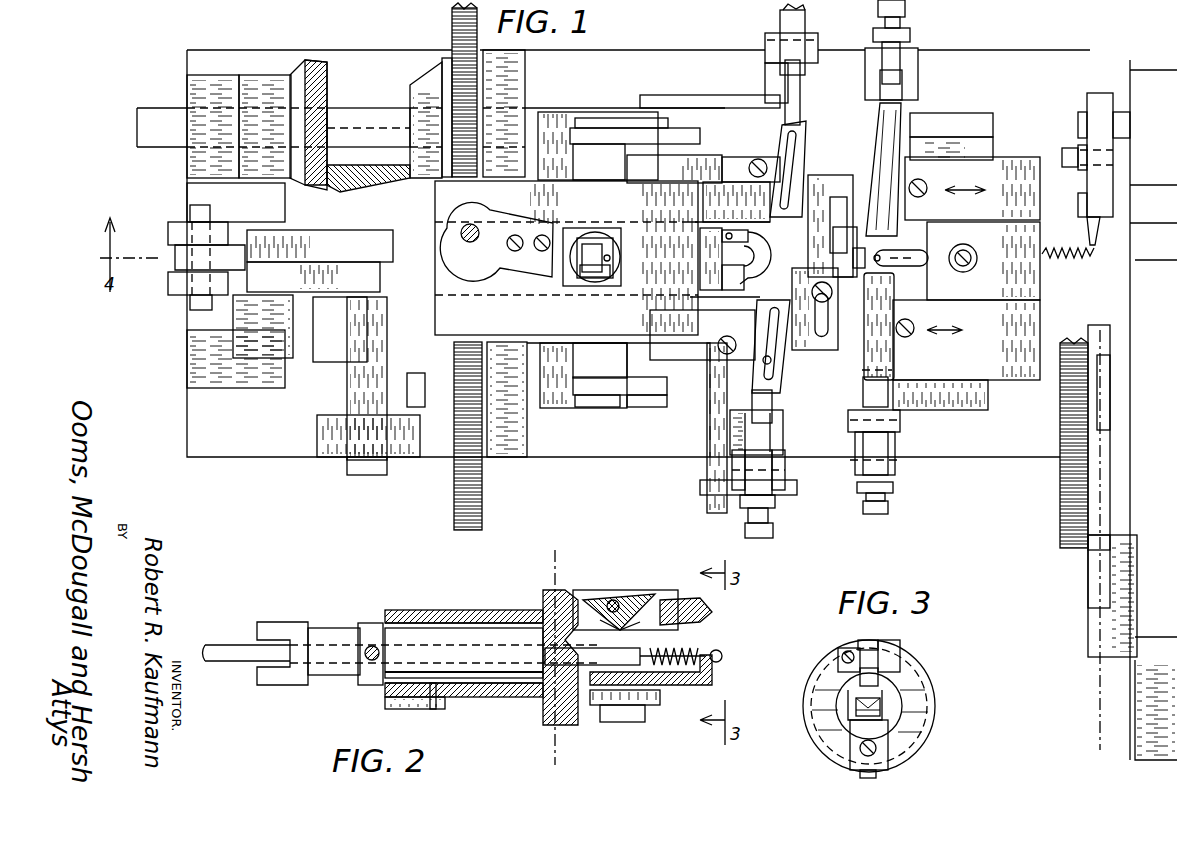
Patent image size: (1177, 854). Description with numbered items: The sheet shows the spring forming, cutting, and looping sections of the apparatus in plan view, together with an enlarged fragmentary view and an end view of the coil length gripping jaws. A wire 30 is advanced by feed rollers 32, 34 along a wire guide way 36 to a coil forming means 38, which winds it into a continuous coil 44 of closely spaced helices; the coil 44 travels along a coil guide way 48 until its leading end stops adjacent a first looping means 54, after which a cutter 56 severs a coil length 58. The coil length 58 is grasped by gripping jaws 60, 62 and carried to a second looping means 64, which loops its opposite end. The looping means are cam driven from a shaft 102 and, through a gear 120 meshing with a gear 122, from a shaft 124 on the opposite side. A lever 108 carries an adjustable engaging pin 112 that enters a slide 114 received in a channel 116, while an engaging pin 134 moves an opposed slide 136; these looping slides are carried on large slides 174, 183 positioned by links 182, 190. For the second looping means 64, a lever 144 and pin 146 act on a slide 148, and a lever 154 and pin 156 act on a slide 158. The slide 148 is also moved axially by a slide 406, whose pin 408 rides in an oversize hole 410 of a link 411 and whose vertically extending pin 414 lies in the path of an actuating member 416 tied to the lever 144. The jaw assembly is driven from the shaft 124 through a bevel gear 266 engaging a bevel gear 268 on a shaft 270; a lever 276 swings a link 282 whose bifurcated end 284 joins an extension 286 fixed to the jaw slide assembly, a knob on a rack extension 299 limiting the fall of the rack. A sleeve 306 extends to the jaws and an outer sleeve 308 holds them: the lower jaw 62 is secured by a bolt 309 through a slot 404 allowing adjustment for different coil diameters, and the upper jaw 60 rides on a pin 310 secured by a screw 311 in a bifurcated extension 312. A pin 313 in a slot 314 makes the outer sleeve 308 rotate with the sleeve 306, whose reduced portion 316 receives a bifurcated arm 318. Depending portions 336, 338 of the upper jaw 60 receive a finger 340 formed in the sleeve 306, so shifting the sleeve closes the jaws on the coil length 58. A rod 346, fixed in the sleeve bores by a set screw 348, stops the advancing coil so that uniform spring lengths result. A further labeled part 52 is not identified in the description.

In FIG. 1, the wire 30 is at (1100, 721).
In FIG. 1, the feed roller 32 is at (1092, 571).
In FIG. 1, the feed roller 34 is at (1110, 391).
In FIG. 1, the wire guide way 36 is at (1100, 504).
In FIG. 1, the coil forming means 38 is at (1086, 236).
In FIG. 1, the coil 44 is at (1068, 256).
In FIG. 1, the coil guide way 48 is at (902, 254).
In FIG. 1, the column 52 is at (877, 278).
In FIG. 1, the first looping means 54 is at (876, 146).
In FIG. 1, the cutter 56 is at (840, 175).
In FIG. 2, the coil length 58 is at (655, 640).
In FIG. 1, the upper gripping jaw 60 is at (760, 247).
In FIG. 3, the upper gripping jaw 60 is at (902, 680).
In FIG. 1, the lower gripping jaw 62 is at (795, 300).
In FIG. 2, the lower gripping jaw 62 is at (712, 680).
In FIG. 3, the lower gripping jaw 62 is at (885, 714).
In FIG. 1, the second looping means 64 is at (760, 122).
In FIG. 1, the shaft 102 is at (408, 383).
In FIG. 1, the lever 108 is at (895, 461).
In FIG. 1, the adjustable engaging pin 112 is at (900, 427).
In FIG. 1, the slide 114 is at (863, 394).
In FIG. 1, the channel 116 is at (860, 359).
In FIG. 1, the gear 120 is at (465, 513).
In FIG. 1, the gear 122 is at (455, 18).
In FIG. 1, the shaft 124 is at (365, 118).
In FIG. 1, the engaging pin 134 is at (908, 90).
In FIG. 1, the slide 136 is at (884, 96).
In FIG. 1, the lever 144 is at (790, 476).
In FIG. 1, the pin 146 is at (775, 437).
In FIG. 1, the slide 148 is at (774, 400).
In FIG. 1, the lever 154 is at (768, 38).
In FIG. 1, the pin 156 is at (765, 75).
In FIG. 1, the slide 158 is at (808, 124).
In FIG. 1, the large slide 174 is at (1010, 346).
In FIG. 1, the link 182 is at (985, 398).
In FIG. 1, the large slide 183 is at (1000, 172).
In FIG. 1, the link 190 is at (988, 118).
In FIG. 1, the bevel gear 266 is at (318, 62).
In FIG. 1, the bevel gear 268 is at (310, 192).
In FIG. 1, the shaft 270 is at (355, 465).
In FIG. 1, the lever 276 is at (180, 284).
In FIG. 1, the link 282 is at (185, 235).
In FIG. 1, the bifurcated end 284 is at (383, 240).
In FIG. 1, the extension 286 is at (378, 278).
In FIG. 1, the rack extension 299 is at (468, 242).
In FIG. 2, the sleeve 306 is at (512, 680).
In FIG. 2, the outer sleeve 308 is at (475, 622).
In FIG. 3, the outer sleeve 308 is at (817, 688).
In FIG. 2, the bolt 309 is at (660, 699).
In FIG. 3, the bolt 309 is at (880, 744).
In FIG. 2, the pin 310 is at (615, 600).
In FIG. 3, the screw 311 is at (846, 650).
In FIG. 3, the bifurcated extension 312 is at (892, 650).
In FIG. 2, the pin 313 is at (433, 700).
In FIG. 2, the slot 314 is at (410, 705).
In FIG. 1, the reduced portion 316 is at (592, 270).
In FIG. 2, the reduced portion 316 is at (308, 630).
In FIG. 1, the bifurcated arm 318 is at (590, 237).
In FIG. 2, the depending portion 336 is at (552, 612).
In FIG. 2, the depending portion 338 is at (675, 605).
In FIG. 2, the finger 340 is at (625, 620).
In FIG. 2, the rod 346 is at (228, 645).
In FIG. 1, the set screw 348 is at (610, 258).
In FIG. 2, the set screw 348 is at (372, 645).
In FIG. 2, the slot 404 is at (615, 722).
In FIG. 3, the slot 404 is at (872, 777).
In FIG. 1, the slide 406 is at (700, 360).
In FIG. 1, the pin 408 is at (650, 402).
In FIG. 1, the oversize hole 410 is at (637, 388).
In FIG. 1, the link 411 is at (573, 385).
In FIG. 1, the vertically extending pin 414 is at (753, 336).
In FIG. 1, the actuating member 416 is at (718, 470).